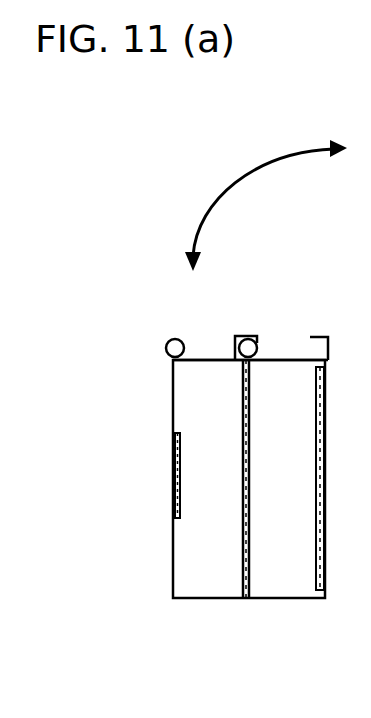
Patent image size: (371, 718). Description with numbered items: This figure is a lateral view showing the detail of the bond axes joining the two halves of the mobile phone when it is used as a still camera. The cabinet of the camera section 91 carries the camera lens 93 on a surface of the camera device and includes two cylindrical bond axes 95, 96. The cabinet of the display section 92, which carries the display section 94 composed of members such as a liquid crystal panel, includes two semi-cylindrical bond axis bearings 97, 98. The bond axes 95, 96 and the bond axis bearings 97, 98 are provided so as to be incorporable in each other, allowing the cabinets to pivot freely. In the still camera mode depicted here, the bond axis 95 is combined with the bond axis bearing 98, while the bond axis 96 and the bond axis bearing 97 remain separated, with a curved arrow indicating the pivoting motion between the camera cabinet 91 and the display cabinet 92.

The cabinet of the camera section 91 is at (200, 560).
The cabinet of the display section 92 is at (290, 575).
The camera lens 93 is at (175, 477).
The display section 94 is at (322, 523).
The bond axis 95 is at (256, 352).
The bond axis 96 is at (167, 345).
The bond axis bearing 97 is at (331, 336).
The bond axis bearing 98 is at (233, 333).